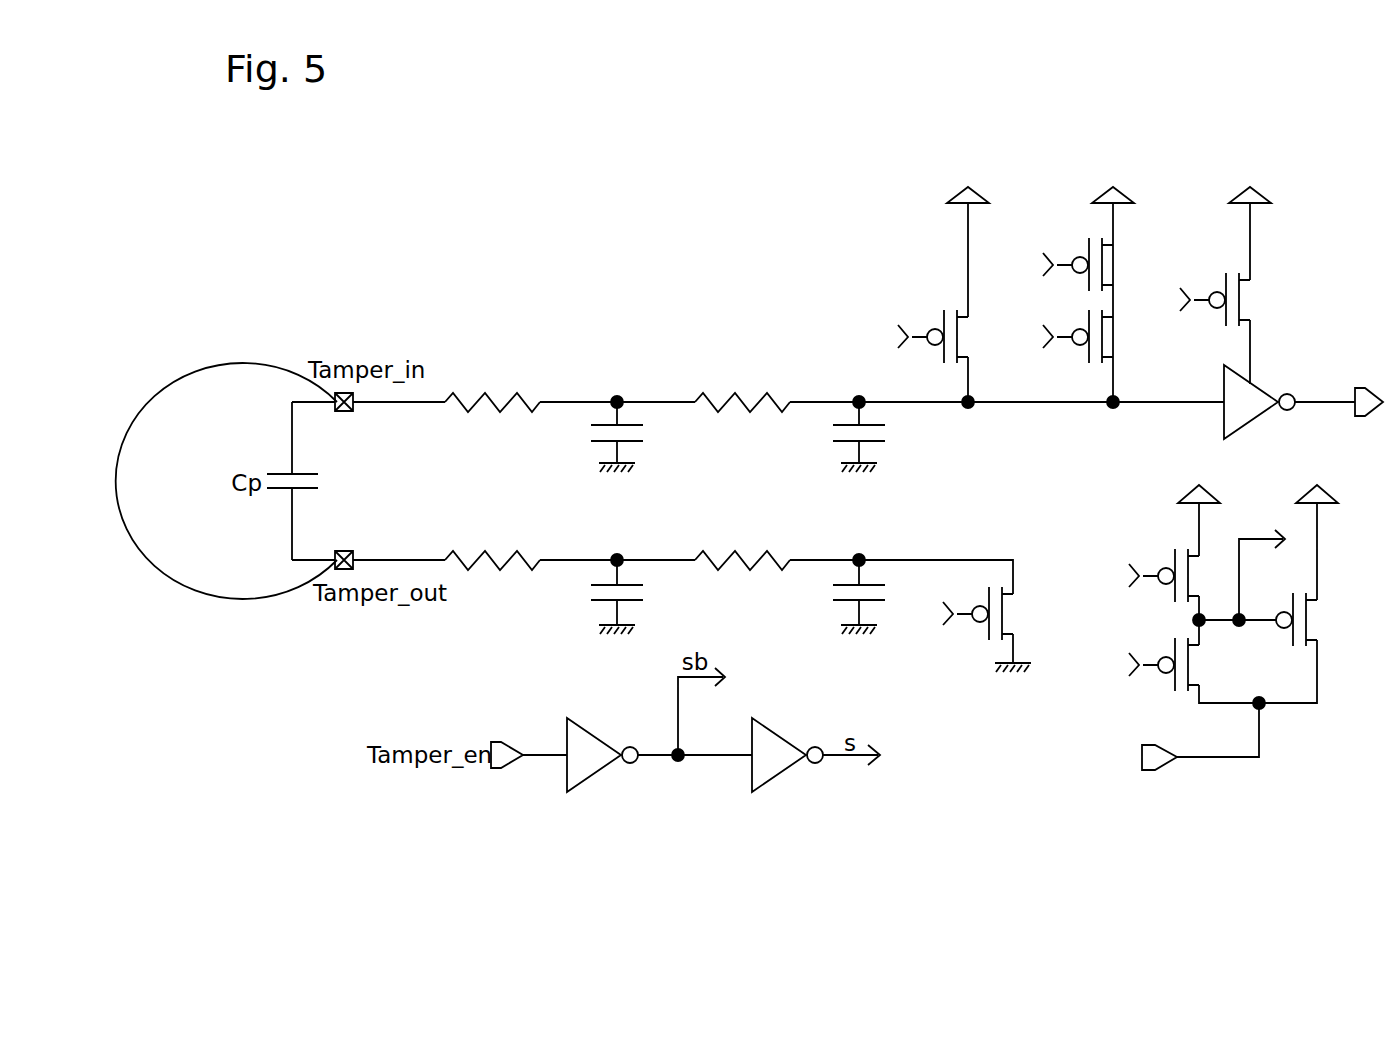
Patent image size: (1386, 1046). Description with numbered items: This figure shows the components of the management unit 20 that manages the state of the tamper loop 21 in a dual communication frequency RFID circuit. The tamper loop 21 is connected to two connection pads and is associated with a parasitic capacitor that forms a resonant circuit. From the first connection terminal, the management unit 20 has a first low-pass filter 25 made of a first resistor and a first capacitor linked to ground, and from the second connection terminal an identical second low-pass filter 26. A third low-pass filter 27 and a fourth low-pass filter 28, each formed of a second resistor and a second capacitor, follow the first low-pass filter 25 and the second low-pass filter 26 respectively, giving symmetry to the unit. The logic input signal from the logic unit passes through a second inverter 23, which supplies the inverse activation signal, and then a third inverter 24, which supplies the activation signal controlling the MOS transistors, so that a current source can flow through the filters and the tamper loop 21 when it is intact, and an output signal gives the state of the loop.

The management unit 20 is at (625, 209).
The tamper loop 21 is at (135, 420).
The second inverter 23 is at (567, 720).
The third inverter 24 is at (768, 783).
The first low-pass filter 25 is at (473, 344).
The second low-pass filter 26 is at (473, 504).
The third low-pass filter 27 is at (723, 344).
The fourth low-pass filter 28 is at (723, 504).